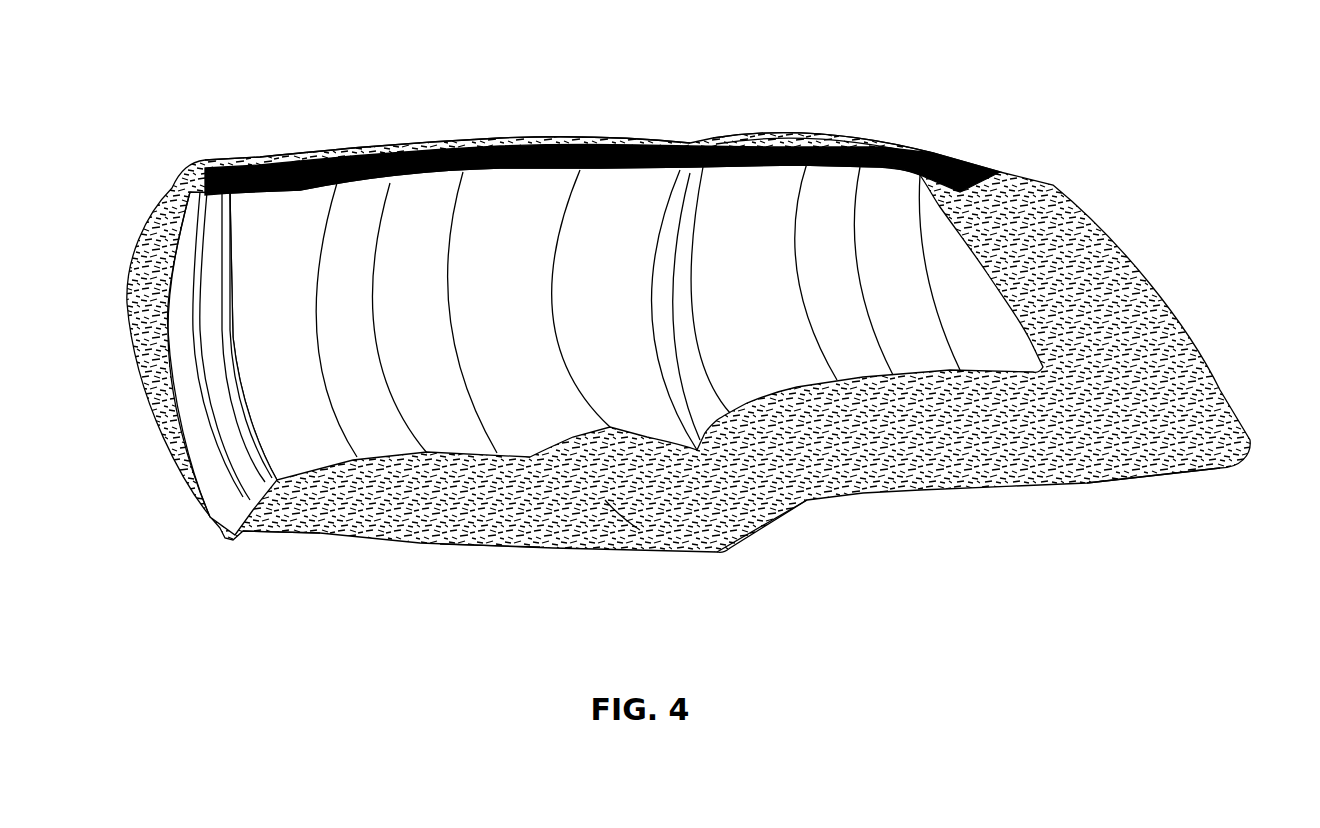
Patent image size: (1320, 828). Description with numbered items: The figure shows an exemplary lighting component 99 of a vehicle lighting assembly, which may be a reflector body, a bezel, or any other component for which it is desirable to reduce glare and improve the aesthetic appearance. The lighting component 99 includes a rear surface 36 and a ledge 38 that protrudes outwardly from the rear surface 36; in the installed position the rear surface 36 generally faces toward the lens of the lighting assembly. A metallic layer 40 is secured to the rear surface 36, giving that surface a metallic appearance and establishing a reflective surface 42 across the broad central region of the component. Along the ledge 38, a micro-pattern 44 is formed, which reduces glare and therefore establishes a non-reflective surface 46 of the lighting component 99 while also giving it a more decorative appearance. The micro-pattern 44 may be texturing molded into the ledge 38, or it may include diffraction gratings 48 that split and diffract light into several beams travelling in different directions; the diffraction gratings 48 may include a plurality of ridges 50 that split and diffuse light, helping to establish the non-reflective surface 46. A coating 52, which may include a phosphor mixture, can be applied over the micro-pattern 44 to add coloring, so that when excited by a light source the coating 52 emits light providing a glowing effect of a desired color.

The rear surface 36 is at (390, 153).
The ledge 38 is at (1205, 350).
The metallic layer 40 is at (507, 263).
The reflective surface 42 is at (735, 311).
The micro-pattern 44 is at (731, 548).
The non-reflective surface 46 is at (1173, 470).
The diffraction gratings 48 is at (513, 540).
The ridges 50 is at (307, 533).
The coating 52 is at (620, 517).
The lighting component 99 is at (826, 99).